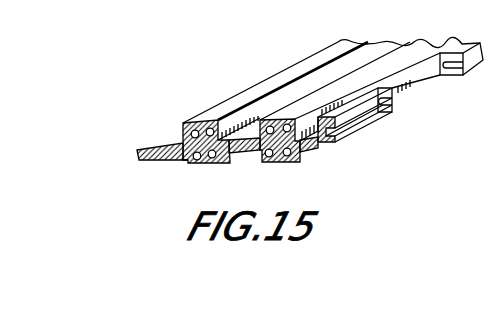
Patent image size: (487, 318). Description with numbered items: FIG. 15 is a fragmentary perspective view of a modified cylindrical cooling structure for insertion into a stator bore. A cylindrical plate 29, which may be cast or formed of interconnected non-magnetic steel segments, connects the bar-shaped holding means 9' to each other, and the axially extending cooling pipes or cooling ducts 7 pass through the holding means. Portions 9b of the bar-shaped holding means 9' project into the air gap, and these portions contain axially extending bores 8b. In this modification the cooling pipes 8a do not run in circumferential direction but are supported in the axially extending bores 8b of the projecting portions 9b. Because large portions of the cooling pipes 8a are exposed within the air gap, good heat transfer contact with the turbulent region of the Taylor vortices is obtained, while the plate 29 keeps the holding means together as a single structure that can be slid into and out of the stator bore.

The cylindrical plate 29 is at (148, 148).
The portions of bar-shaped holding means 9b is at (205, 163).
The cooling pipes 7 is at (192, 123).
The bar-shaped holding means 9' is at (287, 91).
The axially extending bores 8b is at (283, 162).
The cooling pipes 8a is at (362, 120).